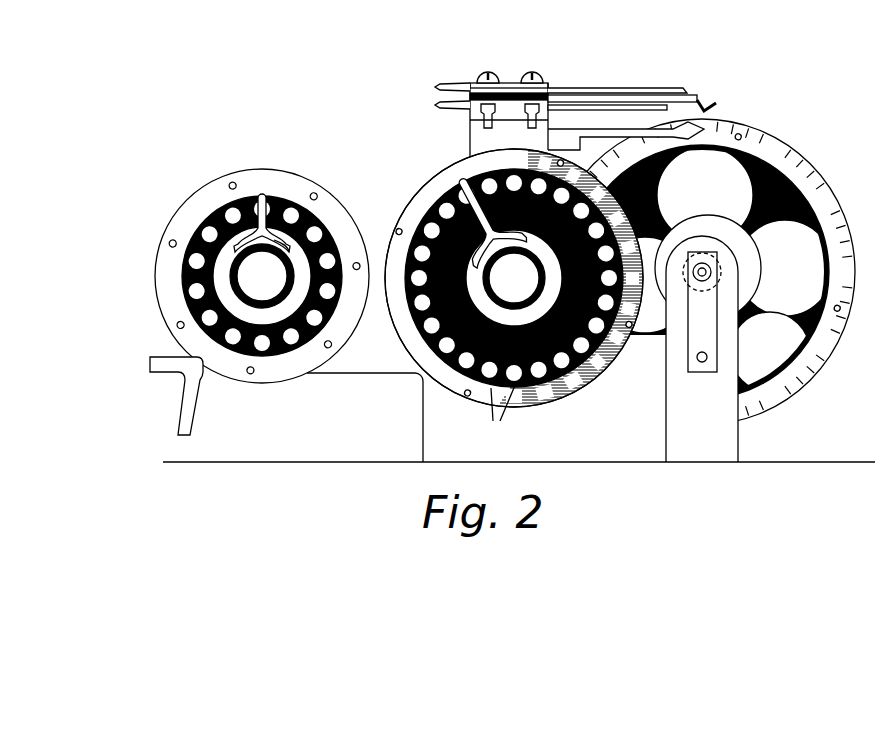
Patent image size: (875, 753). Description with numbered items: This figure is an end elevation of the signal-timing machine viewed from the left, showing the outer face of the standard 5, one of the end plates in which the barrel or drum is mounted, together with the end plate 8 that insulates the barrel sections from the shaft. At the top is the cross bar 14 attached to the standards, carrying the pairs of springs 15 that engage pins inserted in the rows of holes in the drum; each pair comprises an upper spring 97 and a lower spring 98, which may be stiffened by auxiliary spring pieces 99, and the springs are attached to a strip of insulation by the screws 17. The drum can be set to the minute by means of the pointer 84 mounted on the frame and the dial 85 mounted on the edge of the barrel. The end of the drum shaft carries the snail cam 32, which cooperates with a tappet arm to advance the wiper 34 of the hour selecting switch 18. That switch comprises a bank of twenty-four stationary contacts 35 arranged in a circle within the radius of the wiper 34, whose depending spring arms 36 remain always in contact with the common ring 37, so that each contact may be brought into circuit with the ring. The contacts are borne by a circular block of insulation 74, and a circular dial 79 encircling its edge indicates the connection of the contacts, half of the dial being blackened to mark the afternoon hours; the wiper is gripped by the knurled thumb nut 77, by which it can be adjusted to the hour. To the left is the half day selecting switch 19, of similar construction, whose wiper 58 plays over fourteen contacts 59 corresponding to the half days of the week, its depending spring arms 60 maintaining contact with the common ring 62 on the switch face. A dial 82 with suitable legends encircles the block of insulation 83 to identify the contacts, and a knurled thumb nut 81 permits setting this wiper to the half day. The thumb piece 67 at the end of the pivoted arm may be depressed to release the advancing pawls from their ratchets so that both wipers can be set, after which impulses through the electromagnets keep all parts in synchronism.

The standard 5 is at (699, 349).
The end plate 8 is at (833, 305).
The cross bar 14 is at (548, 120).
The springs 15 is at (434, 104).
The screws 17 is at (527, 70).
The hour selecting switch 18 is at (443, 163).
The half day selecting switch 19 is at (228, 251).
The snail cam 32 is at (761, 263).
The wiper 34 is at (436, 183).
The stationary contacts 35 is at (506, 414).
The depending spring arms 36 is at (517, 240).
The common ring 37 is at (514, 281).
The half day switch wiper 58 is at (262, 195).
The contacts 59 is at (231, 277).
The depending spring arms 60 is at (296, 268).
The common ring 62 is at (262, 279).
The thumb piece 67 is at (152, 360).
The block of insulation 74 is at (616, 350).
The knurled thumb nut 77 is at (514, 278).
The circular dial 79 is at (565, 390).
The knurled thumb nut 81 is at (262, 276).
The dial 82 is at (227, 276).
The block of insulation 83 is at (228, 276).
The pointer 84 is at (702, 127).
The dial 85 is at (804, 160).
The upper spring 97 is at (578, 88).
The lower spring 98 is at (706, 101).
The auxiliary spring pieces 99 is at (619, 109).